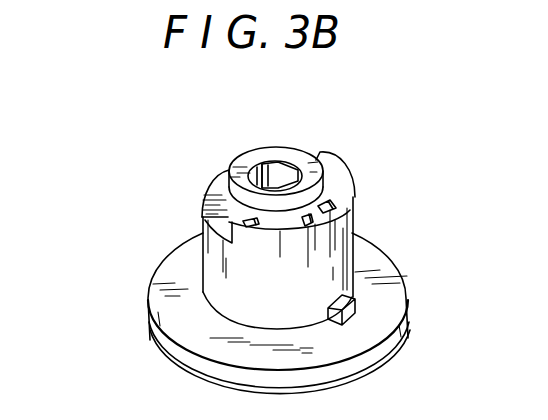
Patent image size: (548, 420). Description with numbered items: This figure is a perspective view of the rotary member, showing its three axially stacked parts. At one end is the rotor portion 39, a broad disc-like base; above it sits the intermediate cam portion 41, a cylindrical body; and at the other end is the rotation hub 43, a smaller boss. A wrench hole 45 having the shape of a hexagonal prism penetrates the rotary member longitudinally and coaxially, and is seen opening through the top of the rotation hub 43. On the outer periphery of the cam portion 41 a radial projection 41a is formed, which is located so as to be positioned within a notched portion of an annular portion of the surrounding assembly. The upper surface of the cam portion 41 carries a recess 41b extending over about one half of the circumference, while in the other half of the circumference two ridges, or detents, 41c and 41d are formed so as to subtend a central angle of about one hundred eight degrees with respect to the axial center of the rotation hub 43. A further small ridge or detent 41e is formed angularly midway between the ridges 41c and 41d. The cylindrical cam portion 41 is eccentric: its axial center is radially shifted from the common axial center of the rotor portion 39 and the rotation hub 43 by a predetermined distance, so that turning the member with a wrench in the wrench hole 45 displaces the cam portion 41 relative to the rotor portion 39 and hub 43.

The rotor portion 39 is at (178, 307).
The cam portion 41 is at (210, 254).
The radial projection 41a is at (352, 316).
The recess 41b is at (216, 180).
The ridge 41c is at (327, 206).
The ridge 41d is at (207, 219).
The small ridge 41e is at (318, 222).
The rotation hub 43 is at (233, 200).
The wrench hole 45 is at (253, 170).